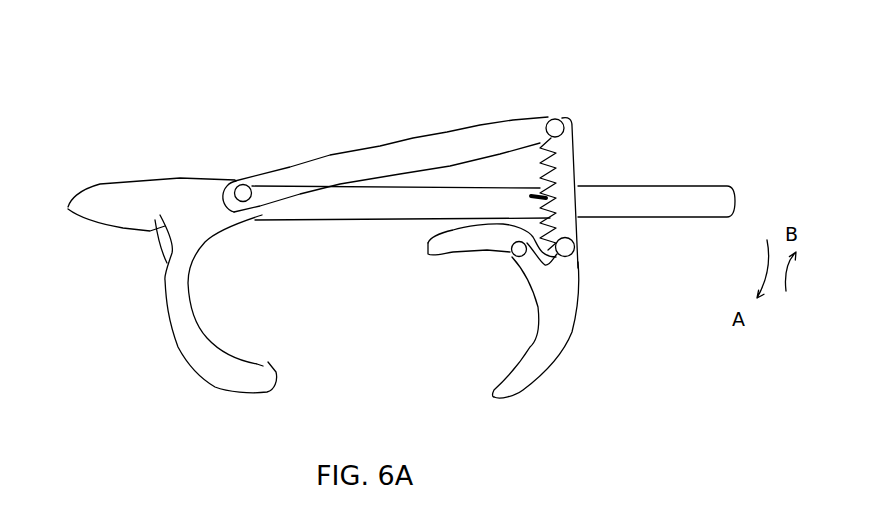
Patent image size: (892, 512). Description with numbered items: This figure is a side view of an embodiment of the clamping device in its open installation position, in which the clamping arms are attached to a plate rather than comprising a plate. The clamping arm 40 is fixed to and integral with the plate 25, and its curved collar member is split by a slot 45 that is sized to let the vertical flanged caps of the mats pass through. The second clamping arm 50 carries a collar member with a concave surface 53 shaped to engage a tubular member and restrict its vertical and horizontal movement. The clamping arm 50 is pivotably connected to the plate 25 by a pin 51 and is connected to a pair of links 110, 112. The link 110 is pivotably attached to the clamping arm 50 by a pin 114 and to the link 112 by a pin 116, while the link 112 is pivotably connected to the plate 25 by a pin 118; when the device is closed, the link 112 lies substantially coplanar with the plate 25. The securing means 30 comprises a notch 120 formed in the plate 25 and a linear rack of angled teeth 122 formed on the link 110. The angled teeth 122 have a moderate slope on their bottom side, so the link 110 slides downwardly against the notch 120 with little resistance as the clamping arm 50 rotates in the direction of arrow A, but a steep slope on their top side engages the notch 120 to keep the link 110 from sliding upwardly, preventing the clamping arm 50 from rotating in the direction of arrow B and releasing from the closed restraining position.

The plate 25 is at (320, 229).
The securing means 30 is at (591, 157).
The clamping arm 40 is at (159, 410).
The slot 45 is at (198, 318).
The clamping arm 50 is at (568, 391).
The pin 51 is at (504, 254).
The concave surface 53 is at (536, 329).
The link 110 is at (580, 137).
The link 112 is at (410, 141).
The pin 114 is at (575, 246).
The pin 116 is at (562, 117).
The pin 118 is at (245, 188).
The notch 120 is at (543, 193).
The angled teeth 122 is at (547, 162).